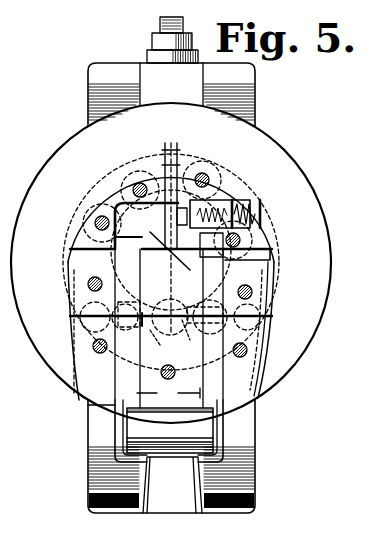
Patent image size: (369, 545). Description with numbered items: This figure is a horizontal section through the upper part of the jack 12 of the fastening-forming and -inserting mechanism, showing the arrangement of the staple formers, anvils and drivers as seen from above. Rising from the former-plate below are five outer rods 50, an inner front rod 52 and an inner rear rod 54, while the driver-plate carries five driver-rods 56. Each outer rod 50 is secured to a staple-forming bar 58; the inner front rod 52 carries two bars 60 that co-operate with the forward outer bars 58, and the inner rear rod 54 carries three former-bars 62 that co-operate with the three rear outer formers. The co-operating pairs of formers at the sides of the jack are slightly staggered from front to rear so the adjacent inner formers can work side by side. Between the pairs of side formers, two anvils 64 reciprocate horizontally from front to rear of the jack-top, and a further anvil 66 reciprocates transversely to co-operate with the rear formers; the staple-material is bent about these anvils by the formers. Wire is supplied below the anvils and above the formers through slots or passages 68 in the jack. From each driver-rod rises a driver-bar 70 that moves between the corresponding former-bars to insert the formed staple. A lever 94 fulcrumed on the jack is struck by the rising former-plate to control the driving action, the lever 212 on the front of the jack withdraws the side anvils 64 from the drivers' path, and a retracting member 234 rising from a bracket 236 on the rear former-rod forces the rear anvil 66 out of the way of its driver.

The jack 12 is at (307, 192).
The outer rods 50 is at (178, 178).
The inner front rod 52 is at (187, 339).
The inner rear rod 54 is at (203, 278).
The driver-rods 56 is at (106, 215).
The staple-forming bar 58 is at (168, 180).
The former bars 60 is at (162, 344).
The former-bars 62 is at (185, 263).
The anvils 64 is at (168, 393).
The anvil 66 is at (186, 210).
The slots or passages 68 is at (166, 155).
The driver-bar 70 is at (205, 170).
The lever 94 is at (160, 72).
The lever 212 is at (200, 430).
The retracting member 234 is at (224, 172).
The bracket 236 is at (232, 190).